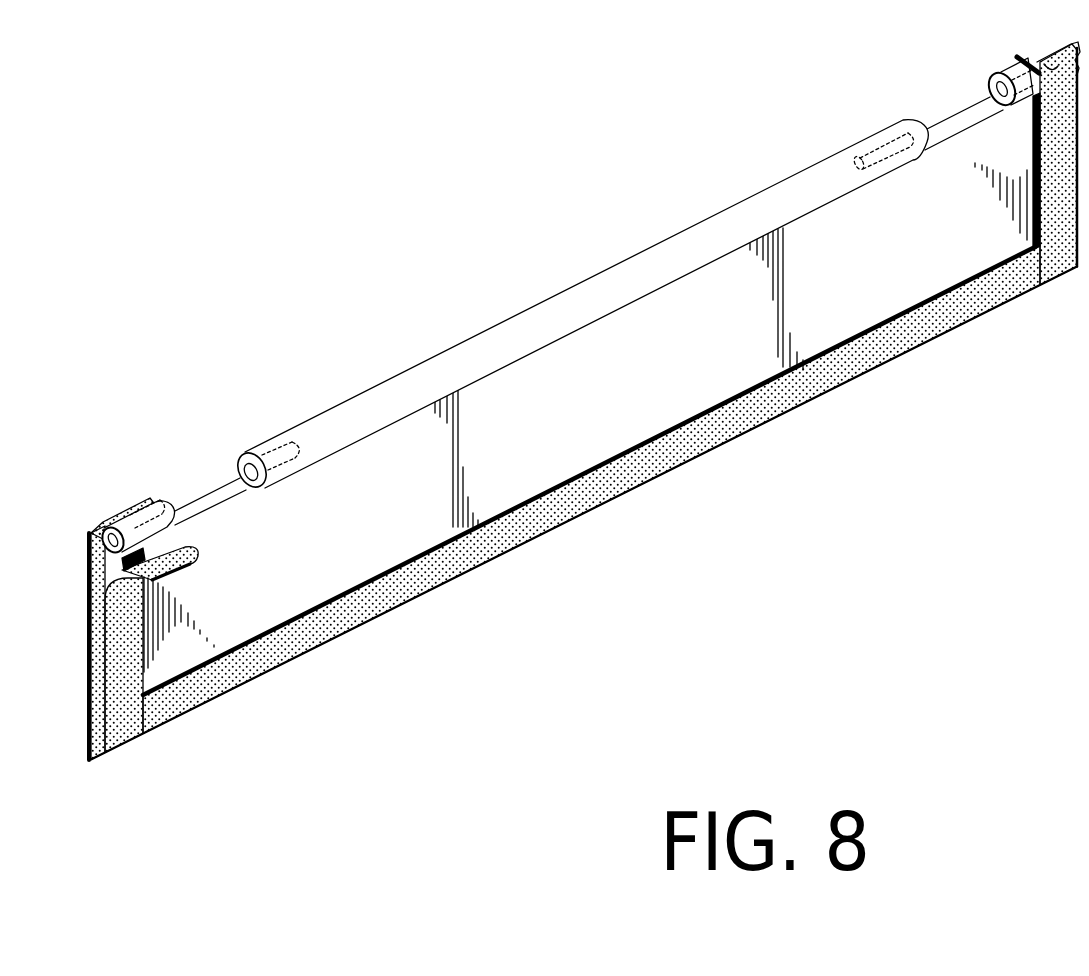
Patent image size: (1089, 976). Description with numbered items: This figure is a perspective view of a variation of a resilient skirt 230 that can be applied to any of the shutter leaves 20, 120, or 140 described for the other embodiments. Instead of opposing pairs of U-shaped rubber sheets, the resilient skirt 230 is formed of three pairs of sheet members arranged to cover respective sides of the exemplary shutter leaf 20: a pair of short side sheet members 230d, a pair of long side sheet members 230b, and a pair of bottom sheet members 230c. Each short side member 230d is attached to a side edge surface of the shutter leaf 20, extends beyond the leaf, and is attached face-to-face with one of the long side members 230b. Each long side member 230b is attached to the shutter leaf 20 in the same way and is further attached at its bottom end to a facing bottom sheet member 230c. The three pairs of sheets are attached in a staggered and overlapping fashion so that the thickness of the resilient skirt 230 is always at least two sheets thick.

The shutter leaf 20 is at (622, 345).
The shutter leaf 120 is at (589, 311).
The shutter leaf 140 is at (589, 311).
The resilient skirt 230 is at (584, 401).
The long side sheet member 230b is at (130, 677).
The bottom sheet member 230c is at (558, 520).
The short side sheet member 230d is at (1058, 217).